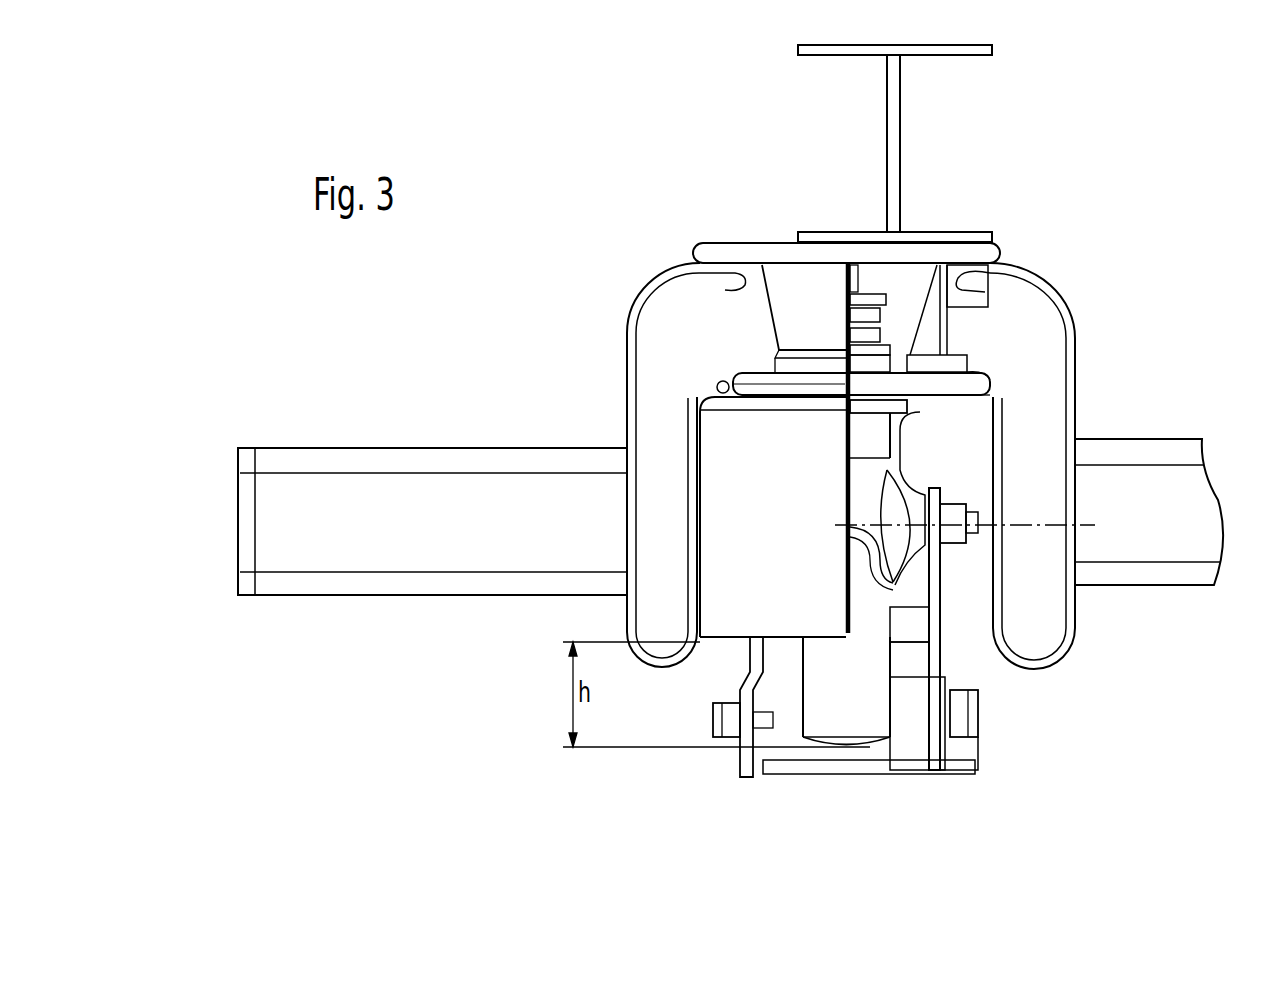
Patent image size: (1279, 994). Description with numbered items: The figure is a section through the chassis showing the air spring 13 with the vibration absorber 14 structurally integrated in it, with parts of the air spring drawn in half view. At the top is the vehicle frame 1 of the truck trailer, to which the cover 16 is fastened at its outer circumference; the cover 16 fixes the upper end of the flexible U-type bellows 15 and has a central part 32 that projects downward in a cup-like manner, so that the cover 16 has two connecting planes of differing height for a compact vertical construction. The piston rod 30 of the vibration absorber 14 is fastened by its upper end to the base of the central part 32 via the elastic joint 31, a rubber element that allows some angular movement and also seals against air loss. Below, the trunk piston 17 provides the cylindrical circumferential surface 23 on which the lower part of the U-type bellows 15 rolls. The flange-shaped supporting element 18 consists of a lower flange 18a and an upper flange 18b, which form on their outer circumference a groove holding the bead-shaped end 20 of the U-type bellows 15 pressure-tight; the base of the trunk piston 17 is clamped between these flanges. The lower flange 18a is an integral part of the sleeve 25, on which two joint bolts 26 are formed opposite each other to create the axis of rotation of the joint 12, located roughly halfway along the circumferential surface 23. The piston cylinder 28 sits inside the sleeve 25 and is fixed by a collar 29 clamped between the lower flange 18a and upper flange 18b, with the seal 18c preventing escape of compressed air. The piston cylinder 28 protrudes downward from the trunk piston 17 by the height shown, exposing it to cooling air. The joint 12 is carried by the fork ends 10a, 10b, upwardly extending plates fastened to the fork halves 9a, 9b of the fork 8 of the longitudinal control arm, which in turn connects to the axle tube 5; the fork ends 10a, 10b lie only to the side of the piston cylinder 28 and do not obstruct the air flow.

The vehicle frame 1 is at (898, 128).
The axle tube 5 is at (337, 550).
The fork 8 is at (795, 770).
The fork half 9a is at (932, 772).
The fork half 9b is at (757, 779).
The fork end 10a is at (950, 762).
The fork end 10b is at (740, 760).
The joint 12 is at (1043, 523).
The air spring 13 is at (652, 278).
The vibration absorber 14 is at (940, 613).
The U-type bellows 15 is at (625, 428).
The cover 16 is at (1004, 247).
The trunk piston 17 is at (773, 517).
The supporting element 18 is at (732, 369).
The lower flange 18a is at (912, 430).
The upper flange 18b is at (928, 400).
The seal 18c is at (932, 370).
The bead-shaped end 20 is at (716, 386).
The circumferential surface 23 is at (890, 608).
The sleeve 25 is at (877, 480).
The joint bolts 26 is at (1000, 608).
The piston cylinder 28 is at (844, 760).
The collar 29 is at (873, 410).
The piston rod 30 is at (935, 344).
The elastic joint 31 is at (843, 318).
The central part 32 is at (765, 314).